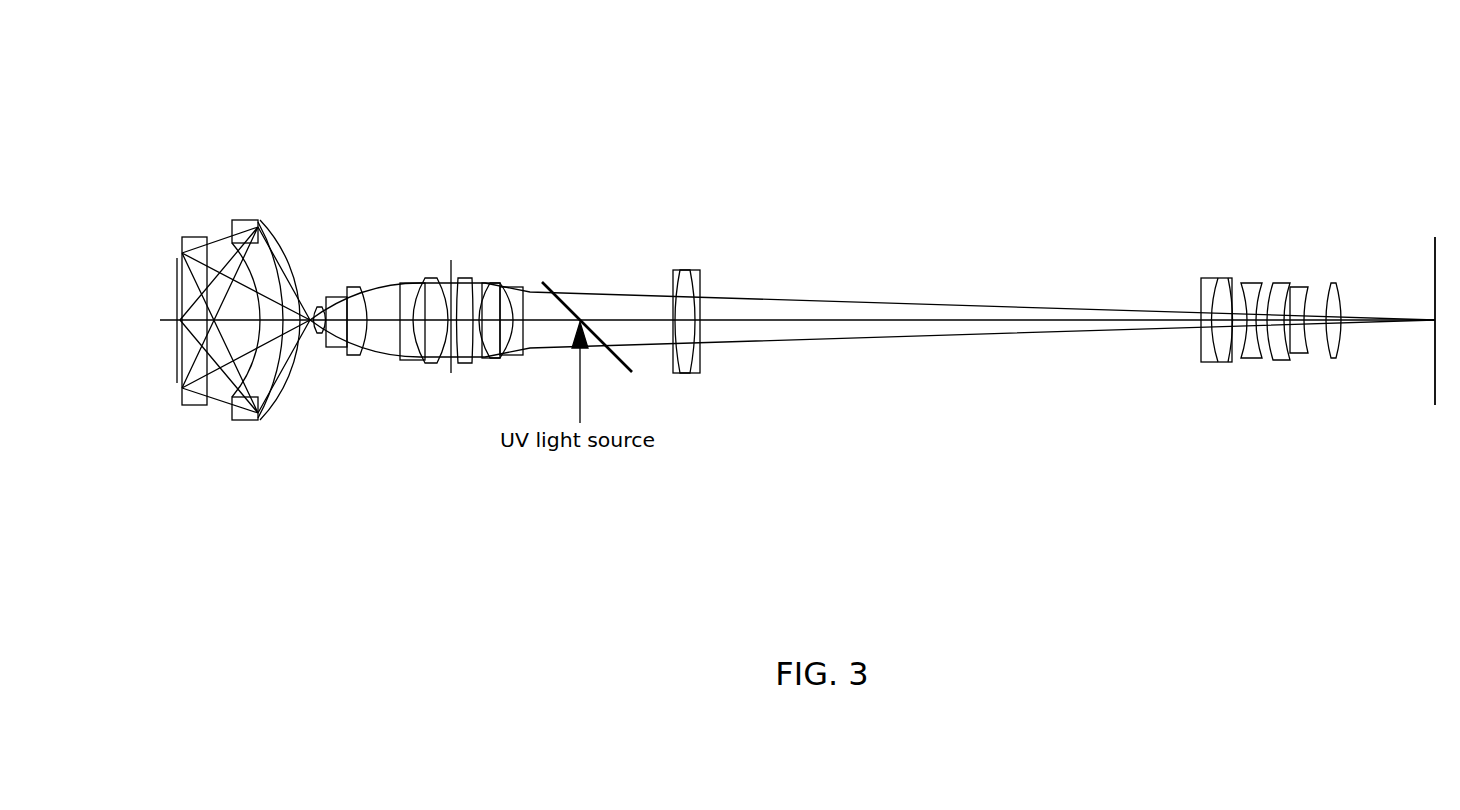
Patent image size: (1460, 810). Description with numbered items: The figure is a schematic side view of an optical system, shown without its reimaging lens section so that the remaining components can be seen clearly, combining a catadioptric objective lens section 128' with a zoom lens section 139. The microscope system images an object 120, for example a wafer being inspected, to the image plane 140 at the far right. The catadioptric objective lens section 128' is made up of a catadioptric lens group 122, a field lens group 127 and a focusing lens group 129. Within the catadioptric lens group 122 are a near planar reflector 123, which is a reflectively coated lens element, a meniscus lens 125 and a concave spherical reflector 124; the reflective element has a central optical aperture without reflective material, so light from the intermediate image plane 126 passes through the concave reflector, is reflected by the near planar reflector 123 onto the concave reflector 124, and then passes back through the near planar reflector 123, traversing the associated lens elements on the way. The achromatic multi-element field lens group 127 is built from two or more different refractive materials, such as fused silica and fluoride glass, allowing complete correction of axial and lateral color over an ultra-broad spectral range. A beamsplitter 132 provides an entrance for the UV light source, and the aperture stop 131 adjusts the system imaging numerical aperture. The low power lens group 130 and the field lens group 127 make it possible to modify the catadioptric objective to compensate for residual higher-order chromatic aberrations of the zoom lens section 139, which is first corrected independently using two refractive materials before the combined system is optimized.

The object 120 is at (177, 367).
The catadioptric lens group 122 is at (177, 187).
The near planar reflector 123 is at (195, 405).
The concave spherical reflector 124 is at (282, 398).
The meniscus lens 125 is at (240, 422).
The intermediate image plane 126 is at (308, 332).
The field lens group 127 is at (300, 187).
The catadioptric objective lens section 128' is at (426, 270).
The focusing lens group 129 is at (539, 266).
The low power lens group 130 is at (660, 378).
The aperture stop 131 is at (450, 373).
The beamsplitter 132 is at (553, 290).
The zoom lens section 139 is at (1197, 210).
The image plane 140 is at (1432, 398).